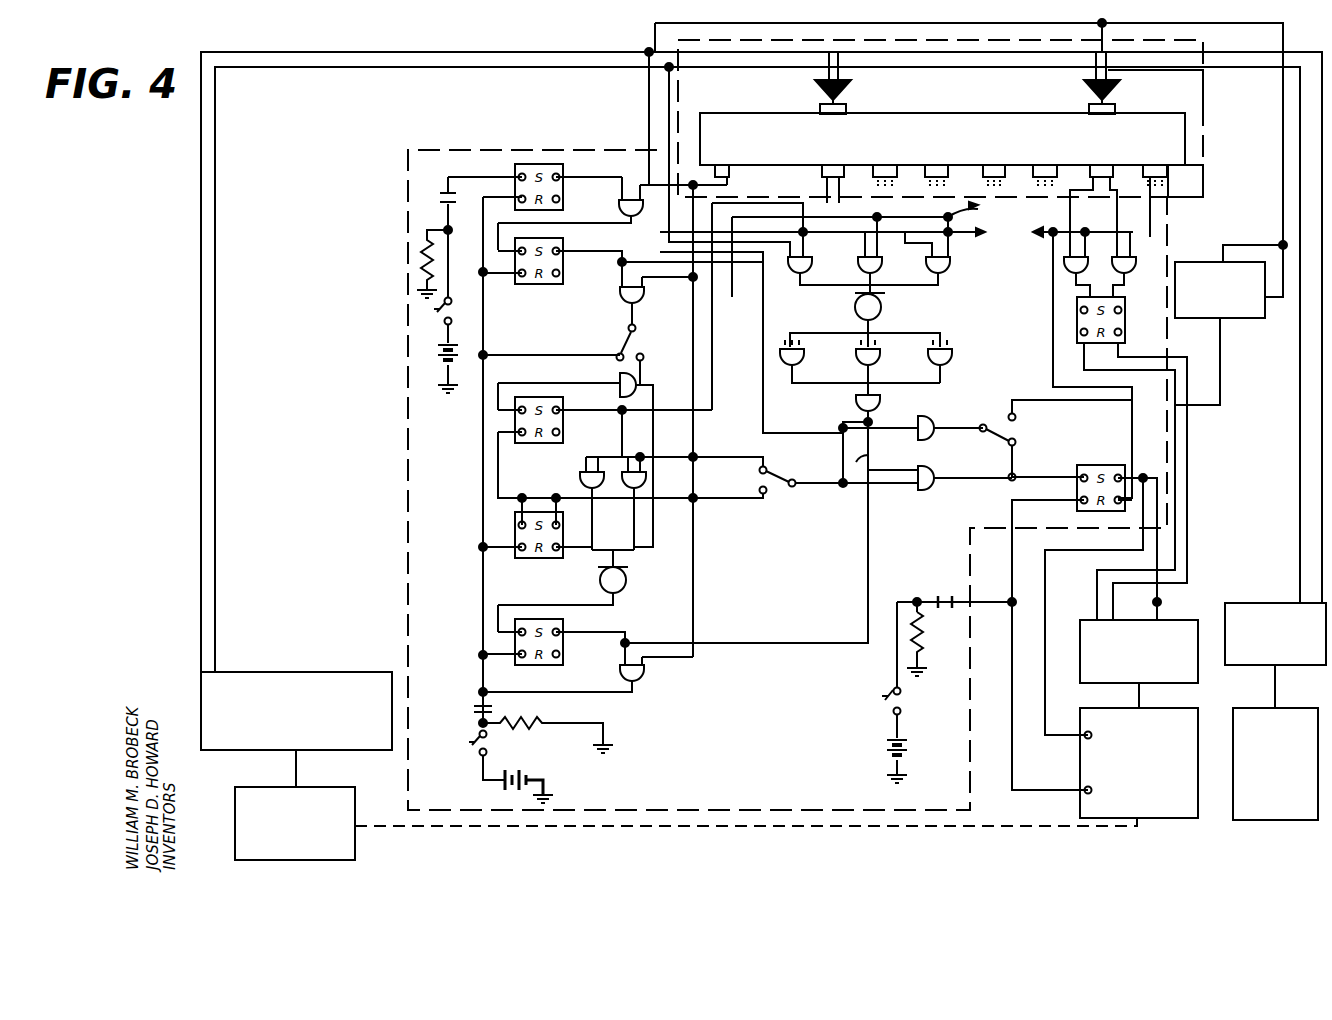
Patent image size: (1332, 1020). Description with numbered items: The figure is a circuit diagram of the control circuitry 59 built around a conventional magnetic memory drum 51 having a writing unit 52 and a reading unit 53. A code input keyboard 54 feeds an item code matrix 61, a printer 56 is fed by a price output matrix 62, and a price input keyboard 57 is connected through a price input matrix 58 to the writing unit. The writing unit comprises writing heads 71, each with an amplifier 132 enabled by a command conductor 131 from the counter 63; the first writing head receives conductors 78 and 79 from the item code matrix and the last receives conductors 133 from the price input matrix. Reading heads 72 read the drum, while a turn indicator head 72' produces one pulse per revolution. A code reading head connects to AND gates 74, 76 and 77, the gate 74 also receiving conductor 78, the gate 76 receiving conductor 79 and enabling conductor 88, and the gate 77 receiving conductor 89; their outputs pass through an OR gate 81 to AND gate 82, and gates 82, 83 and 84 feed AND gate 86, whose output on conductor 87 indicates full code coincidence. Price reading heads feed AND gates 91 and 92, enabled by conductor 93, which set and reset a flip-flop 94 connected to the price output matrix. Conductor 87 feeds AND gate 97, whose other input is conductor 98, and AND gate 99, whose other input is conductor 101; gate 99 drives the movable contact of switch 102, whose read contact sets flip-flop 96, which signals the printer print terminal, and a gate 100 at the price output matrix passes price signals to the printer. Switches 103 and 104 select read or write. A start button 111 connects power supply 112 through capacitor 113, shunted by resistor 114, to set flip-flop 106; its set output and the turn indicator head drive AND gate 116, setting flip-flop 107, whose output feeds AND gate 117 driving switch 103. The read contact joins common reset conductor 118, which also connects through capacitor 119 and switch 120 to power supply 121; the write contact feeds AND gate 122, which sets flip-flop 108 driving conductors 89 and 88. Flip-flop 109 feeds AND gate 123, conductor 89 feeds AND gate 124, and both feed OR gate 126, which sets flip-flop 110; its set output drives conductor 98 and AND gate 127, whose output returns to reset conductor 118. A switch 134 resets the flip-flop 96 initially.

The magnetic memory drum 51 is at (1236, 155).
The writing unit 52 is at (1236, 95).
The reading unit 53 is at (1236, 191).
The code input keyboard 54 is at (355, 857).
The printer 56 is at (1172, 823).
The price input keyboard 57 is at (1265, 820).
The price input matrix 58 is at (1282, 578).
The control circuitry 59 is at (400, 452).
The item code matrix 61 is at (304, 672).
The price output matrix 62 is at (1188, 677).
The counter 63 is at (1238, 318).
The writing head 71 is at (846, 110).
The reading head 72 is at (987, 198).
The turn indicator head 72' is at (747, 179).
The AND gate circuit 74 is at (810, 269).
The AND gate circuit 76 is at (880, 269).
The AND gate circuit 77 is at (946, 272).
The conductor 78 is at (201, 292).
The conductor 79 is at (216, 246).
The OR gate circuit 81 is at (879, 306).
The AND gate circuit 82 is at (797, 370).
The AND gate circuit 83 is at (878, 366).
The AND gate circuit 84 is at (948, 372).
The AND gate circuit 86 is at (878, 405).
The conductor 87 is at (861, 453).
The conductor 88 is at (967, 232).
The conductor 89 is at (982, 211).
The AND gate circuit 91 is at (1062, 274).
The AND gate circuit 92 is at (1128, 274).
The conductor 93 is at (1077, 331).
The flip-flop circuit 94 is at (1124, 335).
The flip-flop circuit 96 is at (1105, 468).
The AND gate circuit 97 is at (933, 466).
The conductor 98 is at (912, 470).
The AND gate circuit 99 is at (923, 416).
The gate circuit 100 is at (1157, 602).
The conductor 101 is at (818, 408).
The switch 102 is at (1002, 418).
The switch 103 is at (621, 328).
The switch 104 is at (756, 474).
The flip-flop circuit 106 is at (556, 189).
The flip-flop circuit 107 is at (526, 292).
The flip-flop circuit 108 is at (516, 446).
The flip-flop circuit 109 is at (526, 562).
The flip-flop circuit 110 is at (551, 666).
The start button 111 is at (438, 324).
The power supply 112 is at (438, 352).
The capacitor 113 is at (440, 185).
The resistor 114 is at (418, 258).
The AND gate circuit 116 is at (626, 219).
The AND gate circuit 117 is at (621, 280).
The common reset conductor 118 is at (483, 492).
The capacitor 119 is at (474, 709).
The switch 120 is at (470, 754).
The power supply 121 is at (515, 750).
The AND gate circuit 122 is at (620, 384).
The AND gate circuit 123 is at (594, 470).
The AND gate circuit 124 is at (625, 488).
The OR gate circuit 126 is at (619, 586).
The AND gate circuit 127 is at (643, 674).
The command conductor 131 is at (1283, 131).
The amplifier 132 is at (818, 85).
The conductors 133 is at (1300, 443).
The switch 134 is at (903, 700).